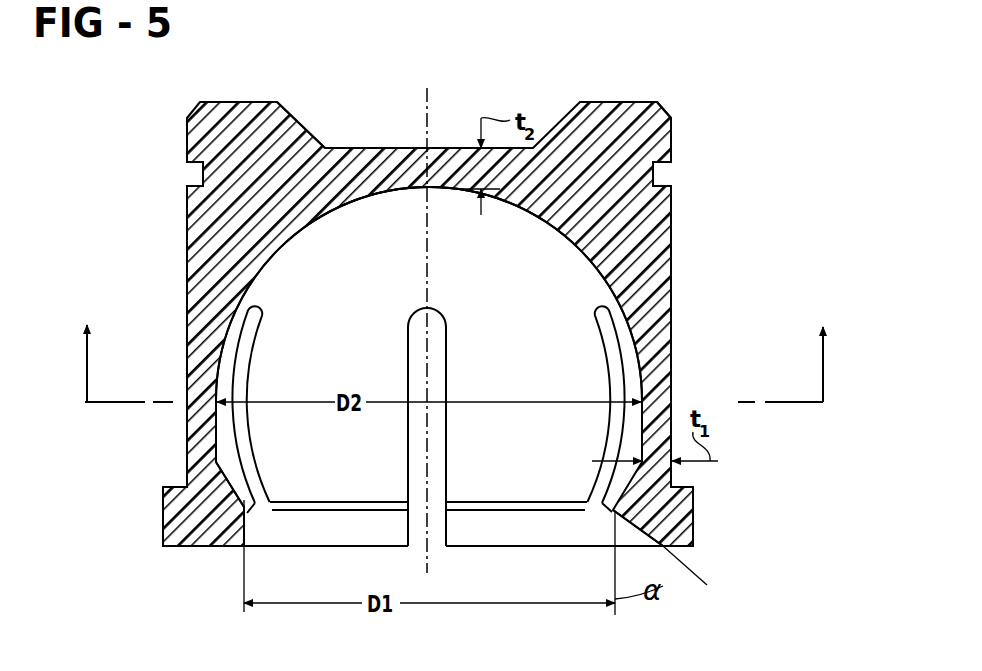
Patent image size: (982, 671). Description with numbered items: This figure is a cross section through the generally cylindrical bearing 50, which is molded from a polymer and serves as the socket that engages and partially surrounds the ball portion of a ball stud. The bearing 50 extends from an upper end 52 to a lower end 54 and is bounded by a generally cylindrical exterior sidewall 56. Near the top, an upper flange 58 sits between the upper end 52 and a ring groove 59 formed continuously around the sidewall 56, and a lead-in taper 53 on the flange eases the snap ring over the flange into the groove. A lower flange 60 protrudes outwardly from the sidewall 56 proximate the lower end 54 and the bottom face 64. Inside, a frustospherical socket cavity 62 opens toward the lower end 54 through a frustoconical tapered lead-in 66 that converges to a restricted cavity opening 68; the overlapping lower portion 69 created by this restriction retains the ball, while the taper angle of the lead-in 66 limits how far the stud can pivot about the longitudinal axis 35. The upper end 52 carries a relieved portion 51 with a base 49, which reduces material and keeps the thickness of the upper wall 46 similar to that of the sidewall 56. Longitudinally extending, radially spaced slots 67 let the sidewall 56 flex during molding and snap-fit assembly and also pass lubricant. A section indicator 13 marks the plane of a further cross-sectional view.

The section line 13- 13 is at (452, 353).
The longitudinal axis 35 is at (427, 548).
The upper wall 46 is at (382, 182).
The base 49 is at (352, 147).
The bearing 50 is at (674, 270).
The relieved portion 51 is at (570, 80).
The upper end 52 is at (585, 102).
The lead-in taper 53 is at (662, 108).
The lower end 54 is at (663, 547).
The exterior sidewall 56 is at (667, 383).
The upper flange 58 is at (672, 138).
The ring groove 59 is at (203, 178).
The lower flange 60 is at (163, 512).
The socket cavity 62 is at (522, 252).
The bottom surface 64 is at (516, 548).
The tapered lead-in 66 is at (228, 526).
The slots 67 is at (248, 345).
The cavity opening 68 is at (334, 511).
The overlapping lower portion 69 is at (620, 511).